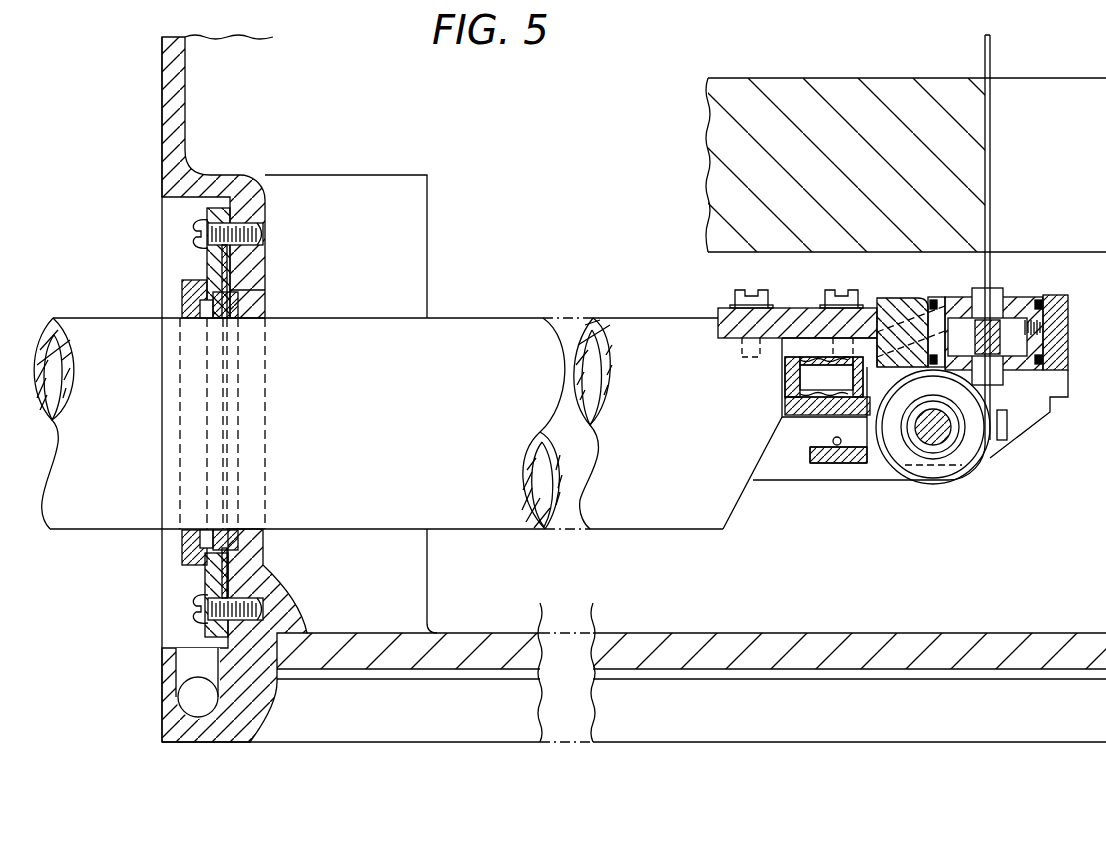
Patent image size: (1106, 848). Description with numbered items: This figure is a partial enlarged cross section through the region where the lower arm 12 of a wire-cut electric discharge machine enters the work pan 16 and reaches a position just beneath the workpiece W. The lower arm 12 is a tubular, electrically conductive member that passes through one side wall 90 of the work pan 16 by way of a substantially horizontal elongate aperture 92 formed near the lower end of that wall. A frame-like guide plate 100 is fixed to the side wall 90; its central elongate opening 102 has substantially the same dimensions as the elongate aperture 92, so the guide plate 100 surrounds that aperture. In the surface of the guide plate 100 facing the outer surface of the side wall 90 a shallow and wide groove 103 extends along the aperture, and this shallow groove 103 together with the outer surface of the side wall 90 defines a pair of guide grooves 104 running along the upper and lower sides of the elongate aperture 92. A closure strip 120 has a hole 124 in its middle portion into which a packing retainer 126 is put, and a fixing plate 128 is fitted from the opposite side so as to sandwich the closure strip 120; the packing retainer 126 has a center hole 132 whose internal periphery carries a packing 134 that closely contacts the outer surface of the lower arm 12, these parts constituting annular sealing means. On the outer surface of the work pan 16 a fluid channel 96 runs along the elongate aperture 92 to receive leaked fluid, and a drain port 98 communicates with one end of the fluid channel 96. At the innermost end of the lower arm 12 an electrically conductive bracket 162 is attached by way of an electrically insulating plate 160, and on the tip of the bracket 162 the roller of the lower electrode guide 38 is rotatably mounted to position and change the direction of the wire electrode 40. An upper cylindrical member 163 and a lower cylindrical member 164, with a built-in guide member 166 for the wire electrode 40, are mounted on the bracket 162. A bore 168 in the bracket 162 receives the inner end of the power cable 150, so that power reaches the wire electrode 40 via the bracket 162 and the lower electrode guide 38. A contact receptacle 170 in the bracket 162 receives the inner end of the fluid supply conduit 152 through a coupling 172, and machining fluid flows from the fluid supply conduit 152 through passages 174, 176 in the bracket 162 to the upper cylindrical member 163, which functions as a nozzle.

The work pan 16 is at (250, 386).
The side wall 90 is at (152, 58).
The guide plate 100 is at (207, 210).
The guide grooves 104 is at (232, 252).
The shallow groove 103 is at (240, 278).
The packing retainer 126 is at (182, 290).
The elongate aperture 92 is at (250, 298).
The elongate opening 102 is at (203, 322).
The fixing plate 128 is at (240, 308).
The lower arm 12 is at (488, 330).
The center hole 132 is at (212, 532).
The hole 124 is at (225, 532).
The packing 134 is at (182, 540).
The closure strip 120 is at (210, 580).
The fluid channel 96 is at (178, 658).
The drain port 98 is at (185, 704).
The workpiece W is at (807, 86).
The wire electrode 40 is at (992, 56).
The passage 176 is at (940, 312).
The electrically insulating plate 160 is at (781, 300).
The coupling 172 is at (828, 356).
The bracket 162 is at (893, 300).
The passage 174 is at (893, 330).
The guide member 166 is at (975, 316).
The upper cylindrical member 163 is at (1005, 300).
The fluid supply conduit 152 is at (790, 380).
The lower cylindrical member 164 is at (1010, 365).
The power cable 150 is at (785, 440).
The contact receptacle 170 is at (830, 400).
The bore 168 is at (835, 447).
The lower electrode guide 38 is at (940, 440).